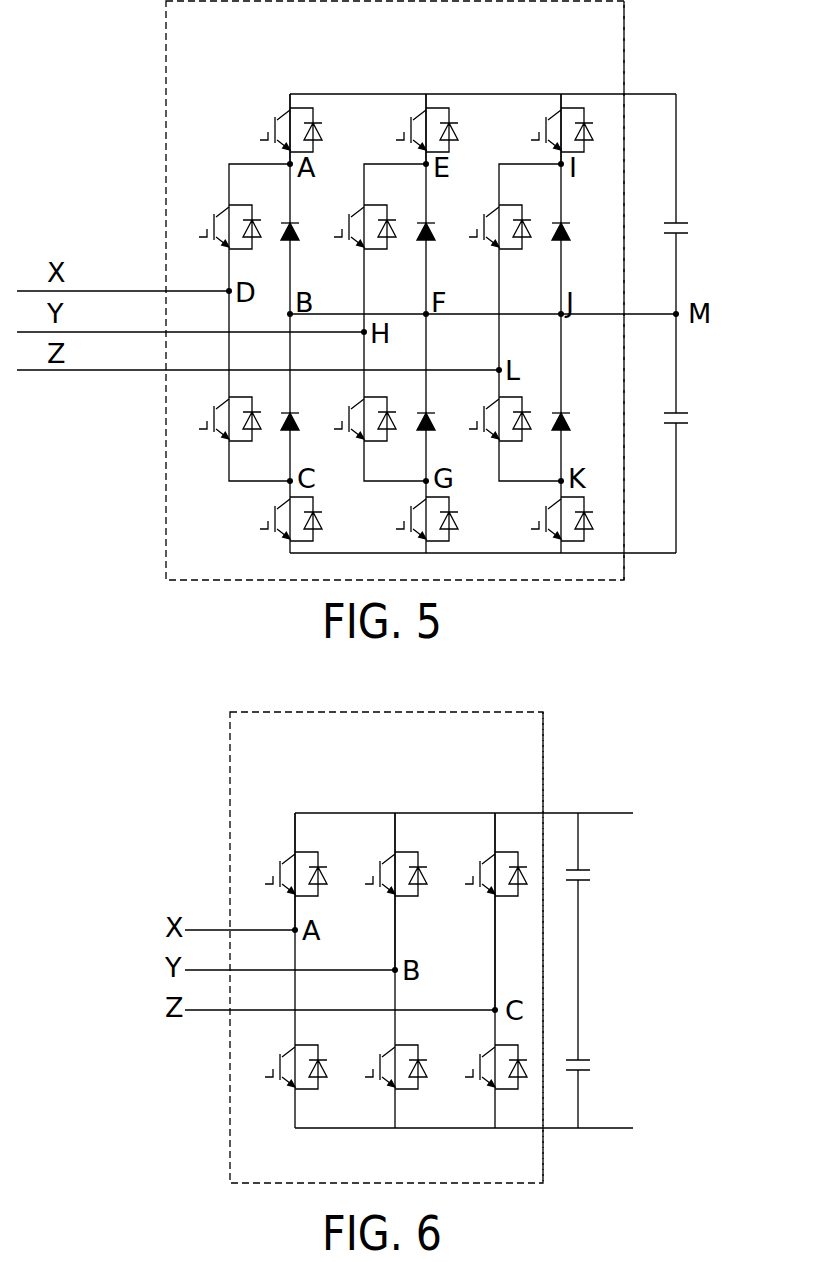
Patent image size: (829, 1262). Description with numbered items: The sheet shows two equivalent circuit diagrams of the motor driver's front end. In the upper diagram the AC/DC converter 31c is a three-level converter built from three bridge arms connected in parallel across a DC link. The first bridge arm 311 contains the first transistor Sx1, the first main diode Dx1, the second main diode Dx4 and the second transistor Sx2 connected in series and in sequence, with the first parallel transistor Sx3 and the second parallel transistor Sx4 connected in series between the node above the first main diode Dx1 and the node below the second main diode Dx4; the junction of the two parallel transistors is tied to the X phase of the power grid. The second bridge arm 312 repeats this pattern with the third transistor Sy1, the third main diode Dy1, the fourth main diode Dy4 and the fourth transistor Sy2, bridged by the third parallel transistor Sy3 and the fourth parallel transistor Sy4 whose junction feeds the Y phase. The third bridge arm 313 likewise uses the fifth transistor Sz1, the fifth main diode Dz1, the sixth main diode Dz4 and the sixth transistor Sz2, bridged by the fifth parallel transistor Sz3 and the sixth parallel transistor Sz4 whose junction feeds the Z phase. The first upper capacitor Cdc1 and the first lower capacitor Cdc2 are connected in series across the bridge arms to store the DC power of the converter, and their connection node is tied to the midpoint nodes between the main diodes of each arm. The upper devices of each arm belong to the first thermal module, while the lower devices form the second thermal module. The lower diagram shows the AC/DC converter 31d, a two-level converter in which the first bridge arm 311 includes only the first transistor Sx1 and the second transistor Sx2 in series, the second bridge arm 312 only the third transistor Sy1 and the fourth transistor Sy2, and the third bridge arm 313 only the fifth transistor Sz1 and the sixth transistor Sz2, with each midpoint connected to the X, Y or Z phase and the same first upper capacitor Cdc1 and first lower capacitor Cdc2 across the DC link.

In FIG. 5, the first bridge arm 311 is at (293, 88).
In FIG. 6, the first bridge arm 311 is at (292, 798).
In FIG. 5, the second bridge arm 312 is at (429, 88).
In FIG. 6, the second bridge arm 312 is at (392, 798).
In FIG. 5, the third bridge arm 313 is at (563, 89).
In FIG. 6, the third bridge arm 313 is at (493, 798).
In FIG. 5, the AC/DC converter 31c is at (626, 50).
In FIG. 6, the AC/DC converter 31d is at (544, 753).
In FIG. 5, the first transistor Sx1 is at (271, 130).
In FIG. 6, the first transistor Sx1 is at (288, 862).
In FIG. 5, the third transistor Sy1 is at (407, 130).
In FIG. 6, the third transistor Sy1 is at (388, 862).
In FIG. 5, the fifth transistor Sz1 is at (542, 130).
In FIG. 6, the fifth transistor Sz1 is at (488, 862).
In FIG. 5, the second transistor Sx2 is at (272, 519).
In FIG. 6, the second transistor Sx2 is at (286, 1081).
In FIG. 5, the fourth transistor Sy2 is at (408, 519).
In FIG. 6, the fourth transistor Sy2 is at (386, 1081).
In FIG. 5, the sixth transistor Sz2 is at (543, 519).
In FIG. 6, the sixth transistor Sz2 is at (486, 1081).
In FIG. 5, the first parallel transistor Sx3 is at (221, 241).
In FIG. 5, the third parallel transistor Sy3 is at (357, 241).
In FIG. 5, the fifth parallel transistor Sz3 is at (492, 241).
In FIG. 5, the second parallel transistor Sx4 is at (221, 430).
In FIG. 5, the fourth parallel transistor Sy4 is at (357, 430).
In FIG. 5, the sixth parallel transistor Sz4 is at (492, 430).
In FIG. 5, the first main diode Dx1 is at (306, 219).
In FIG. 5, the third main diode Dy1 is at (442, 219).
In FIG. 5, the fifth main diode Dz1 is at (577, 219).
In FIG. 5, the second main diode Dx4 is at (306, 409).
In FIG. 5, the fourth main diode Dy4 is at (442, 409).
In FIG. 5, the sixth main diode Dz4 is at (577, 409).
In FIG. 5, the first upper capacitor Cdc1 is at (704, 231).
In FIG. 6, the first upper capacitor Cdc1 is at (609, 874).
In FIG. 5, the first lower capacitor Cdc2 is at (708, 418).
In FIG. 6, the first lower capacitor Cdc2 is at (612, 1063).